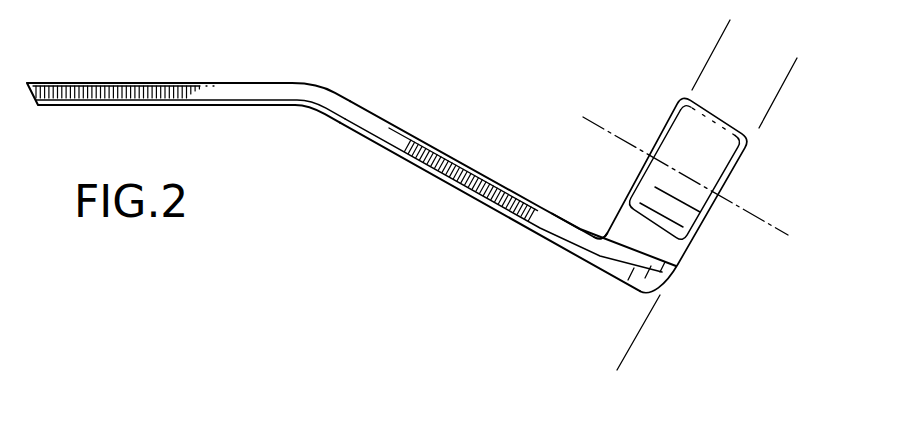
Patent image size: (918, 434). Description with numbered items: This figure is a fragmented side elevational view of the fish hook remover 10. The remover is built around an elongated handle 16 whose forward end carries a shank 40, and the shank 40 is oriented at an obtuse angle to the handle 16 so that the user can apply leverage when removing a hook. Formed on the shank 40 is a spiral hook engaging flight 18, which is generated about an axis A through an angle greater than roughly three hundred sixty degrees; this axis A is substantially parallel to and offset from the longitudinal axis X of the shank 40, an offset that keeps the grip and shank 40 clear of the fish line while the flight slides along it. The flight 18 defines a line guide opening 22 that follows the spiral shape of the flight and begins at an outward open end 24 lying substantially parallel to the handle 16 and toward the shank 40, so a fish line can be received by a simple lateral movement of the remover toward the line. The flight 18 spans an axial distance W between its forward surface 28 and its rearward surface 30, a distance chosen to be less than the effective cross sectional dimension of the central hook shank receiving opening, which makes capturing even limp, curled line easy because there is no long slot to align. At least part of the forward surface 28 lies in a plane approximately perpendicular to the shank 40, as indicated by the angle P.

The hook remover 10 is at (513, 96).
The handle 16 is at (333, 78).
The spiral flight 18 is at (701, 158).
The line guide opening 22 is at (680, 260).
The outward open end 24 is at (613, 237).
The forward surface 28 is at (707, 220).
The rearward surface 30 is at (663, 130).
The shank 40 is at (470, 196).
The longitudinal axis of the shank X is at (182, 108).
The angle P is at (572, 255).
The axial distance W is at (718, 43).
The axis A is at (682, 175).